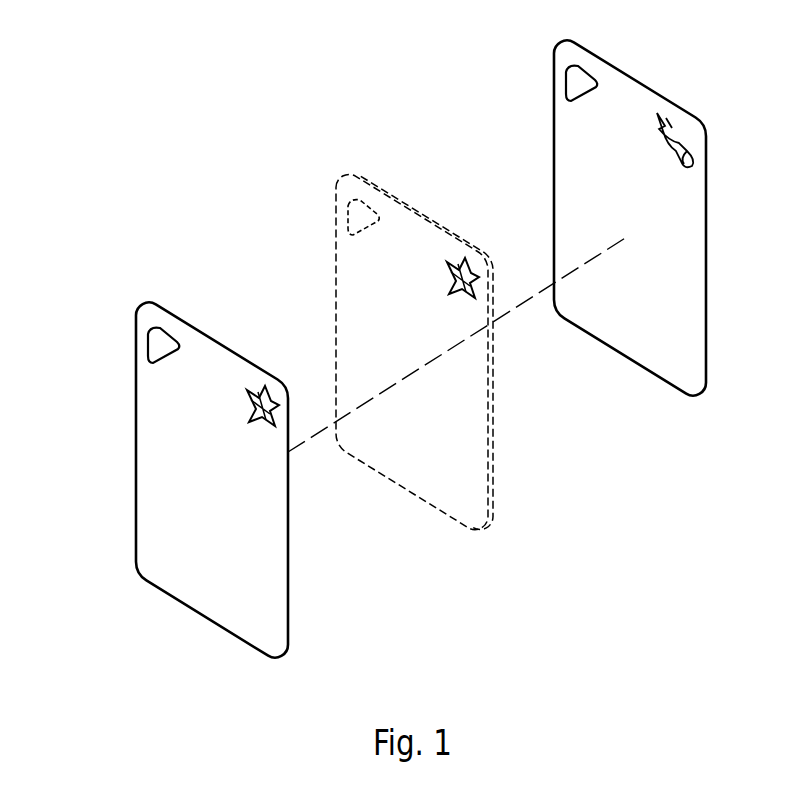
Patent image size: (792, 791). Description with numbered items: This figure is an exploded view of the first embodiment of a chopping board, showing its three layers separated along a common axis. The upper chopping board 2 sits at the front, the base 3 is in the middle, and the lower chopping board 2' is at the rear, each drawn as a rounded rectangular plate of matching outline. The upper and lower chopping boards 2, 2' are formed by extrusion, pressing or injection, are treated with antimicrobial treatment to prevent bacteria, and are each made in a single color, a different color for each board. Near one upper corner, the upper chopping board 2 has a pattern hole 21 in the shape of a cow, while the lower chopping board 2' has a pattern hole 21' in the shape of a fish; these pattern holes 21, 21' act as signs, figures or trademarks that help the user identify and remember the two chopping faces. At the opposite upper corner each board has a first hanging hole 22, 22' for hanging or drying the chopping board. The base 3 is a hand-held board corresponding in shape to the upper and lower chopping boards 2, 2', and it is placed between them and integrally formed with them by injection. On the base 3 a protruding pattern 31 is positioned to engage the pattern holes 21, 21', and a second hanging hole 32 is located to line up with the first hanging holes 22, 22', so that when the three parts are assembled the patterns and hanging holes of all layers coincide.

The upper chopping board 2 is at (242, 479).
The pattern hole 21 is at (252, 362).
The first hanging hole 22 is at (123, 326).
The base 3 is at (467, 437).
The protruding pattern 31 is at (463, 278).
The second hanging hole 32 is at (352, 215).
The lower chopping board 2' is at (662, 217).
The pattern hole 21' is at (665, 100).
The first hanging hole 22' is at (539, 62).